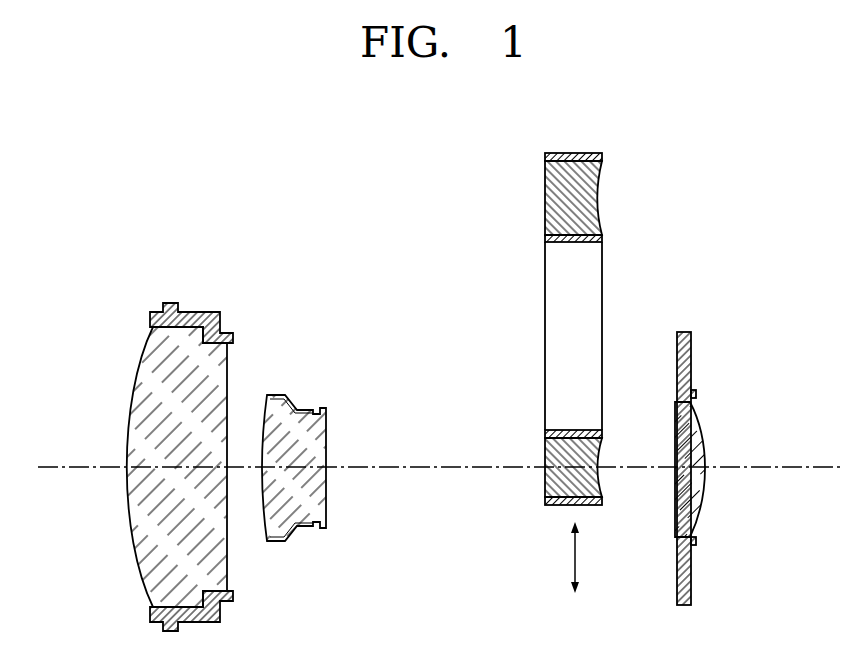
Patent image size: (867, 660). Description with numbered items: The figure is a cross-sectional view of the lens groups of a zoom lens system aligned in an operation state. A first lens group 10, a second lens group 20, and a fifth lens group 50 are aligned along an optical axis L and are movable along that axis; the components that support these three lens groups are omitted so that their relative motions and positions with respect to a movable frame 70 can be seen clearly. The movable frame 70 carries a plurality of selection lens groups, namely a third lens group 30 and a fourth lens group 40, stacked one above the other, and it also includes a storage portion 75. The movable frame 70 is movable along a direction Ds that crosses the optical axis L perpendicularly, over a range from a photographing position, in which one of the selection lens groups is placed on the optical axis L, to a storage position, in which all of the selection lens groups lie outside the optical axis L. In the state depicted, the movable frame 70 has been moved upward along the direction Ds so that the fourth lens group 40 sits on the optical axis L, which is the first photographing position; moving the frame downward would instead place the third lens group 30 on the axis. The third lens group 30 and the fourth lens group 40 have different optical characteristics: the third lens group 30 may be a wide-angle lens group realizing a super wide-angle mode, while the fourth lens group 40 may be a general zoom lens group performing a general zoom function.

The first lens group 10 is at (133, 343).
The second lens group 20 is at (337, 422).
The third lens group 30 is at (553, 196).
The fourth lens group 40 is at (553, 482).
The fifth lens group 50 is at (708, 410).
The movable frame 70 is at (599, 142).
The storage portion 75 is at (587, 242).
The optical axis L is at (782, 468).
The direction crossing the optical axis Ds is at (576, 572).